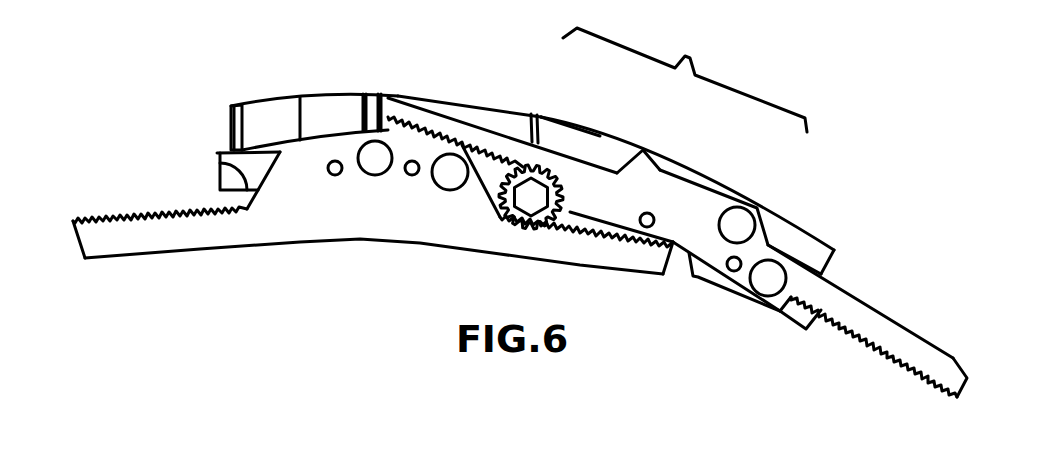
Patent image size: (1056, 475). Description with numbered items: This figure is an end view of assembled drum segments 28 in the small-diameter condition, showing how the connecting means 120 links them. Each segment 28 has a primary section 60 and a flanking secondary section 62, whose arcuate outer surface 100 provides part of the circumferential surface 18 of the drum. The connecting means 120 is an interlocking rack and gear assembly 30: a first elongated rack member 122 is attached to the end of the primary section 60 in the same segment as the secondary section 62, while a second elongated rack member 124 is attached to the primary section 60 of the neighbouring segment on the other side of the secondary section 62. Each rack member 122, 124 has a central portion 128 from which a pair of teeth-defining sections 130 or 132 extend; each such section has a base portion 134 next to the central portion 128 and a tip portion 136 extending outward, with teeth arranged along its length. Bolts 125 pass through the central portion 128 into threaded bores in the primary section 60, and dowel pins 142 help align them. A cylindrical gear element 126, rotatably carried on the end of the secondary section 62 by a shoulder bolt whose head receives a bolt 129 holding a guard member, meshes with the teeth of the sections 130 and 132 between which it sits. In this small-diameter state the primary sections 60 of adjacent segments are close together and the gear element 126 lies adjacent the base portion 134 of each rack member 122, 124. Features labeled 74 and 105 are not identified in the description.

The circumferential surface 18 is at (353, 95).
The segment 28 is at (685, 80).
The rack and gear assembly 30 is at (953, 320).
The primary section 60 is at (312, 96).
The secondary section 62 is at (561, 126).
The handle end cap 74 is at (250, 100).
The outer surface 100 is at (533, 115).
The pivot hole 105 is at (373, 178).
The connecting means 120 is at (824, 368).
The first elongated rack member 122 is at (645, 147).
The second elongated rack member 124 is at (293, 234).
The bolts 125 is at (440, 190).
The gear element 126 is at (398, 98).
The central portion 128 is at (385, 223).
The bolt 129 is at (578, 163).
The teeth-defining sections 130 is at (473, 122).
The teeth-defining sections 132 is at (148, 258).
The base portion 134 is at (558, 140).
The tip portion 136 is at (80, 220).
The dowel pins 142 is at (412, 160).